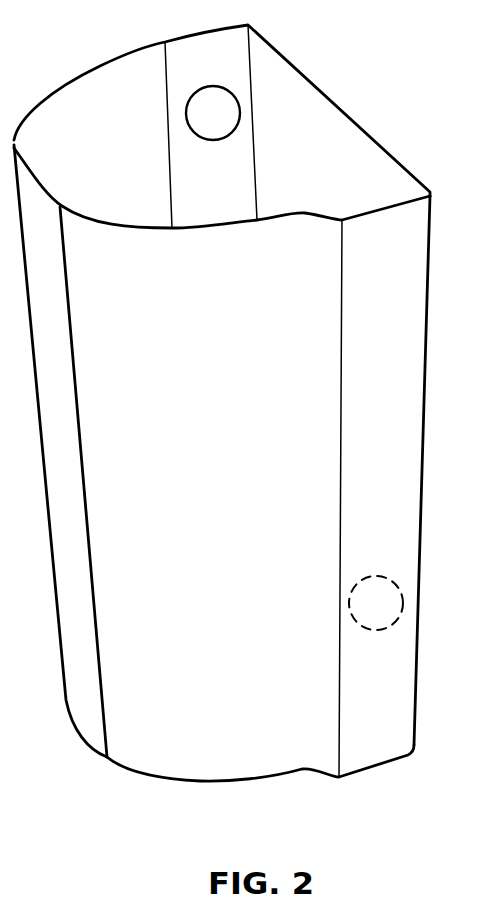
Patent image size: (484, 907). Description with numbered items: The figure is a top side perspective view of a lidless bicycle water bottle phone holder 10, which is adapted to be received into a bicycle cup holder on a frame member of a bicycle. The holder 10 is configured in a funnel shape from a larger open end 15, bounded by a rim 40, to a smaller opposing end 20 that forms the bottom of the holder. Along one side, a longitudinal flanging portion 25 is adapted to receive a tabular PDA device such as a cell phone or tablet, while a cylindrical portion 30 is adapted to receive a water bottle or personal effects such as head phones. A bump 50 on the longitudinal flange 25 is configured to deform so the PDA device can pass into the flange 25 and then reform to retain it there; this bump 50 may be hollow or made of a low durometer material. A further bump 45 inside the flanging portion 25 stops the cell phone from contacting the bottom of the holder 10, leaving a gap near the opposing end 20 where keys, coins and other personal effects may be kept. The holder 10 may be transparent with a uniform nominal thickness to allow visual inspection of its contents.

The bicycle phone holder 10 is at (142, 728).
The open end 15 is at (78, 76).
The opposing end 20 is at (193, 786).
The longitudinal flanging portion 25 is at (238, 166).
The cylindrical portion 30 is at (177, 502).
The rim 40 is at (186, 230).
The bump 45 is at (376, 573).
The bump 50 is at (208, 100).